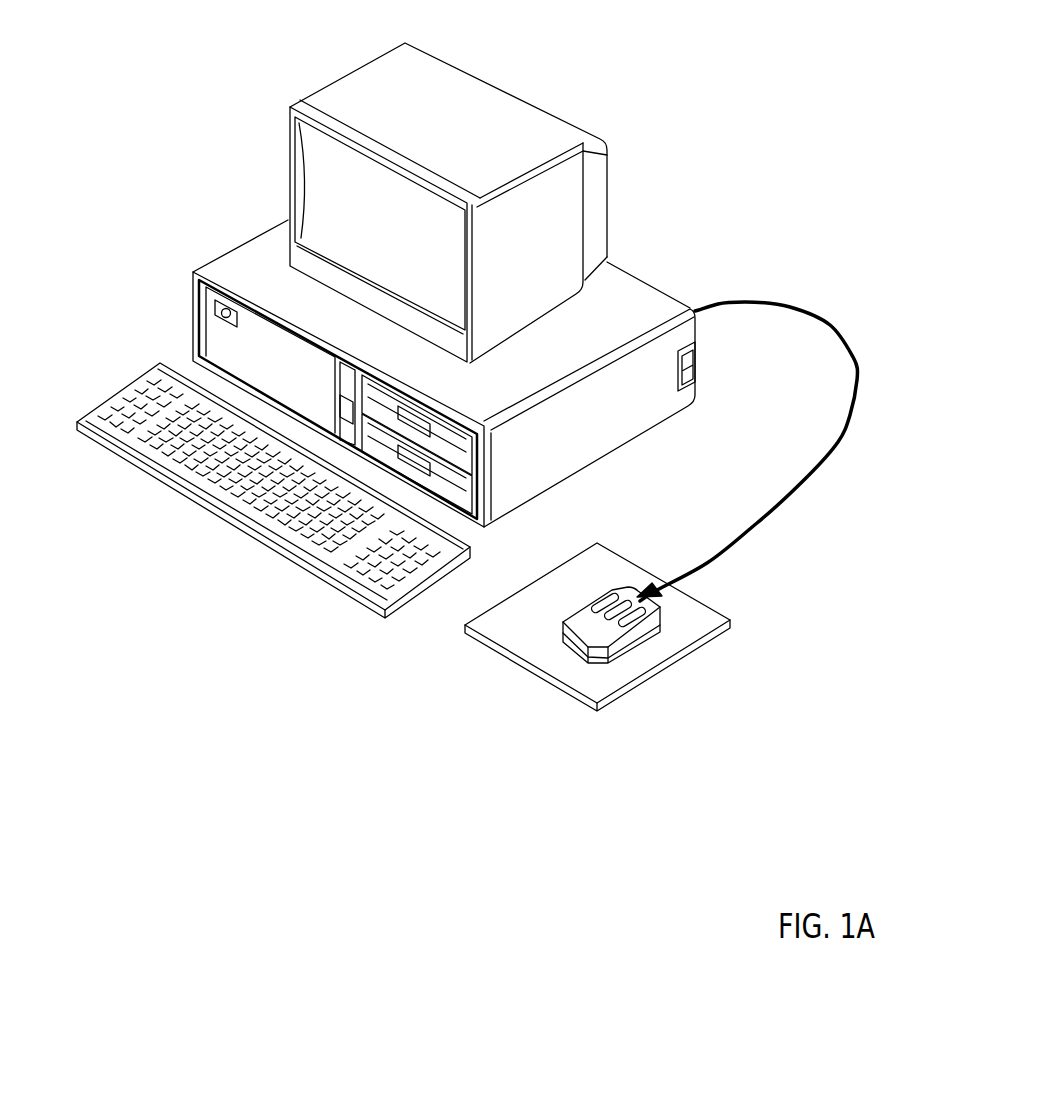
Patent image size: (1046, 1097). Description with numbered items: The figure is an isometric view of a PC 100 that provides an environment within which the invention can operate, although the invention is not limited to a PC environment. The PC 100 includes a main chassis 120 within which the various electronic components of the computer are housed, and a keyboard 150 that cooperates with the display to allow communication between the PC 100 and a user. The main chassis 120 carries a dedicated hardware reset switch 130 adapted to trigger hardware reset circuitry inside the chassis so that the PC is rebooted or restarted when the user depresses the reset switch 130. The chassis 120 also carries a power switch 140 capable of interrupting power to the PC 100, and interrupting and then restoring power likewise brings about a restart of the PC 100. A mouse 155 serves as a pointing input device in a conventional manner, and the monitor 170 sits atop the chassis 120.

The PC 100 is at (675, 90).
The main chassis 120 is at (640, 288).
The dedicated hardware reset switch 130 is at (218, 303).
The power switch 140 is at (697, 352).
The keyboard 150 is at (88, 422).
The mouse 155 is at (637, 623).
The display monitor 170 is at (497, 97).